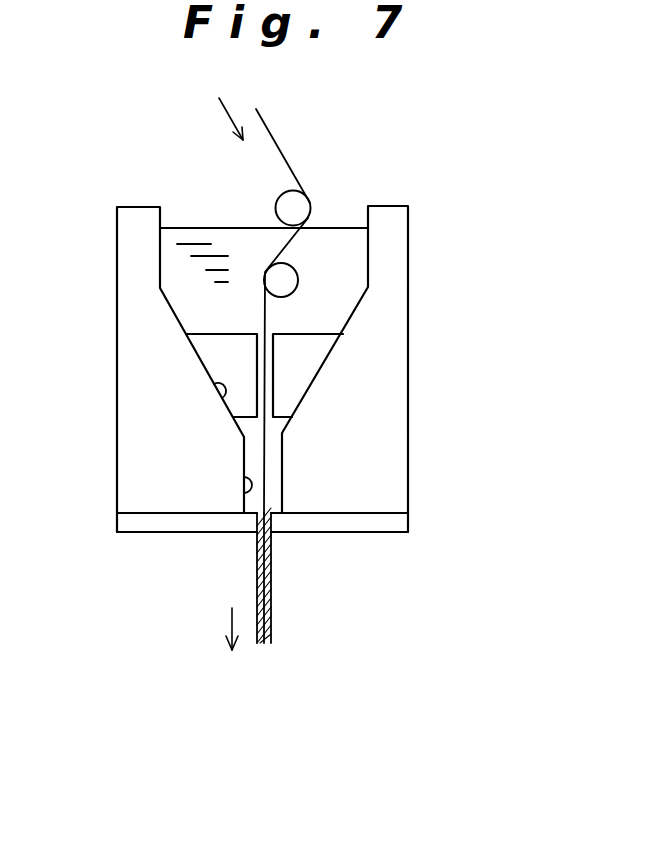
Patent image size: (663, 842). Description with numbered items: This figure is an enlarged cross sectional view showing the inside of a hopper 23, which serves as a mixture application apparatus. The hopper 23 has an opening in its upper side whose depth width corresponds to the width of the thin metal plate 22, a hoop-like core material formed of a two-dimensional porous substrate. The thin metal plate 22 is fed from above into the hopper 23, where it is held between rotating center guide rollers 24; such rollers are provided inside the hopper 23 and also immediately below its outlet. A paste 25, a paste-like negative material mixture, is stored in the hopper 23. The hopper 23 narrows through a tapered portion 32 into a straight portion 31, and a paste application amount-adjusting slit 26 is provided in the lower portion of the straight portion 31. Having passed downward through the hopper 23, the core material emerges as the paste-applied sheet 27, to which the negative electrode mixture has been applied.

The thin metal plate 22 is at (342, 161).
The hopper 23 is at (463, 422).
The center guide rollers 24 is at (282, 205).
The paste 25 is at (437, 272).
The paste application amount-adjusting slit 26 is at (388, 575).
The paste-applied sheet 27 is at (323, 647).
The straight portion 31 is at (243, 500).
The tapered portion 32 is at (220, 397).